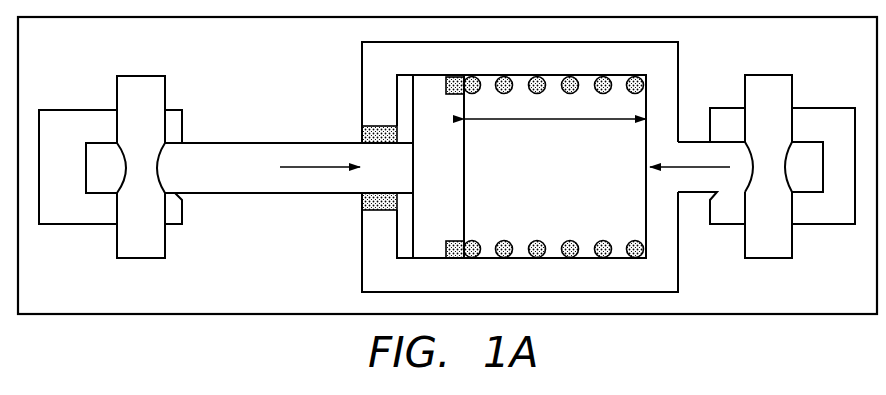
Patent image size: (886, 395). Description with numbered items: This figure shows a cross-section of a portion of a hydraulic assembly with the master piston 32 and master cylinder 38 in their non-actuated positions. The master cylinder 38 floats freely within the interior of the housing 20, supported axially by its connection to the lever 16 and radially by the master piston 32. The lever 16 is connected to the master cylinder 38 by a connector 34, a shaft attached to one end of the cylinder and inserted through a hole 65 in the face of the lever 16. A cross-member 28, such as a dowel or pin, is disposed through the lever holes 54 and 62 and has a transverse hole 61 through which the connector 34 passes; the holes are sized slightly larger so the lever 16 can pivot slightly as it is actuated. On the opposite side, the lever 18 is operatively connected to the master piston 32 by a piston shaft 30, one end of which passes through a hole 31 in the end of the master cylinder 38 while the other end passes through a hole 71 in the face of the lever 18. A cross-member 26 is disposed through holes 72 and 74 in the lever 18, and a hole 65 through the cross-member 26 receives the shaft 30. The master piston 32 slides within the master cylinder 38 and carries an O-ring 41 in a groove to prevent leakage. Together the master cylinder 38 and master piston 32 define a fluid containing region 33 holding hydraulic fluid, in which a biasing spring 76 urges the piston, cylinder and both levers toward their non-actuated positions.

The lever 16 is at (848, 135).
The lever 18 is at (73, 133).
The housing 20 is at (857, 291).
The cross-member 26 is at (156, 180).
The cross-member 28 is at (783, 180).
The piston shaft 30 is at (262, 180).
The hole 31 is at (362, 138).
The master piston 32 is at (452, 180).
The fluid containing region 33 is at (575, 180).
The connector 34 is at (818, 180).
The master cylinder 38 is at (396, 77).
The O-ring 41 is at (440, 84).
The lever hole 54 is at (794, 109).
The hole 61 is at (748, 152).
The lever hole 62 is at (742, 220).
The hole 65 is at (123, 157).
The hole 71 is at (182, 138).
The hole 72 is at (117, 220).
The hole 74 is at (166, 110).
The biasing spring 76 is at (567, 78).